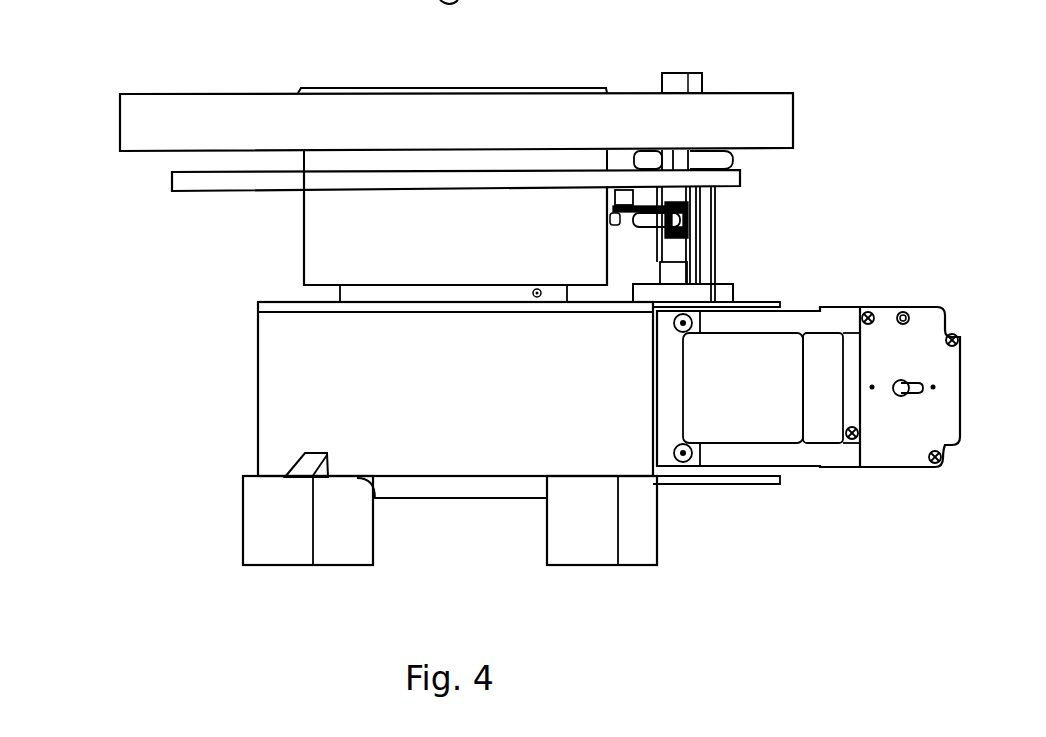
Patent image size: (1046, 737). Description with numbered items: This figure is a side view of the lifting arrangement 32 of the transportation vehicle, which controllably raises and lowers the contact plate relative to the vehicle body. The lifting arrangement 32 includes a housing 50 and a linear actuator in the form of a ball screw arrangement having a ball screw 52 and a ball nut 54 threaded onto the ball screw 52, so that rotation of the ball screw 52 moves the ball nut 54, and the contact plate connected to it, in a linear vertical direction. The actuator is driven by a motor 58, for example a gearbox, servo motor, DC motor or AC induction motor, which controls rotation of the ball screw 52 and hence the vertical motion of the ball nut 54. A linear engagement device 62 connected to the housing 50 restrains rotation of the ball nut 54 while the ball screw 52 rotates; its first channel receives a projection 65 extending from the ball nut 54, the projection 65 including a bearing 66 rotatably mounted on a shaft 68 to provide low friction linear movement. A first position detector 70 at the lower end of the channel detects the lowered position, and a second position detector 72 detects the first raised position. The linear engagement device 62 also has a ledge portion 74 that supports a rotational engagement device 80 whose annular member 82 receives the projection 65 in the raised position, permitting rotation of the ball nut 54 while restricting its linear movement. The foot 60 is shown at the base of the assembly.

The lifting arrangement 32 is at (842, 44).
The housing 50 is at (280, 372).
The ball screw portion 52 is at (312, 163).
The ball nut portion 54 is at (188, 183).
The motor 58 is at (875, 448).
The foot 60 is at (637, 533).
The linear engagement device 62 is at (766, 194).
The projection 65 is at (637, 247).
The bearing 66 is at (688, 214).
The shaft 68 is at (688, 233).
The first position detector 70 is at (733, 287).
The second position detector 72 is at (677, 80).
The ledge portion 74 is at (722, 155).
The rotational engagement device 80 is at (186, 78).
The annular member 82 is at (133, 110).